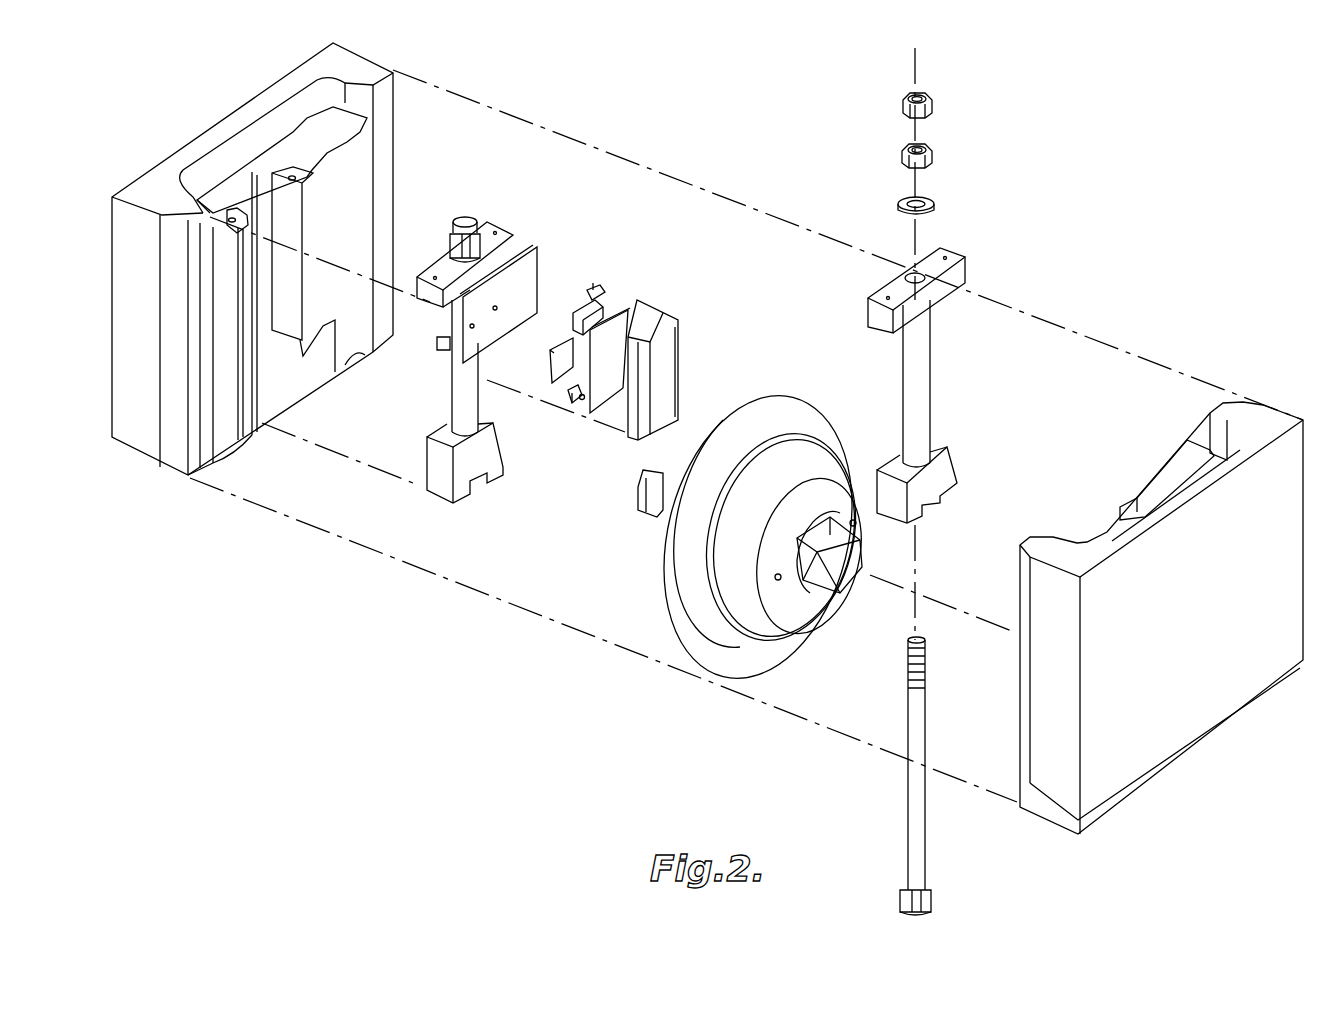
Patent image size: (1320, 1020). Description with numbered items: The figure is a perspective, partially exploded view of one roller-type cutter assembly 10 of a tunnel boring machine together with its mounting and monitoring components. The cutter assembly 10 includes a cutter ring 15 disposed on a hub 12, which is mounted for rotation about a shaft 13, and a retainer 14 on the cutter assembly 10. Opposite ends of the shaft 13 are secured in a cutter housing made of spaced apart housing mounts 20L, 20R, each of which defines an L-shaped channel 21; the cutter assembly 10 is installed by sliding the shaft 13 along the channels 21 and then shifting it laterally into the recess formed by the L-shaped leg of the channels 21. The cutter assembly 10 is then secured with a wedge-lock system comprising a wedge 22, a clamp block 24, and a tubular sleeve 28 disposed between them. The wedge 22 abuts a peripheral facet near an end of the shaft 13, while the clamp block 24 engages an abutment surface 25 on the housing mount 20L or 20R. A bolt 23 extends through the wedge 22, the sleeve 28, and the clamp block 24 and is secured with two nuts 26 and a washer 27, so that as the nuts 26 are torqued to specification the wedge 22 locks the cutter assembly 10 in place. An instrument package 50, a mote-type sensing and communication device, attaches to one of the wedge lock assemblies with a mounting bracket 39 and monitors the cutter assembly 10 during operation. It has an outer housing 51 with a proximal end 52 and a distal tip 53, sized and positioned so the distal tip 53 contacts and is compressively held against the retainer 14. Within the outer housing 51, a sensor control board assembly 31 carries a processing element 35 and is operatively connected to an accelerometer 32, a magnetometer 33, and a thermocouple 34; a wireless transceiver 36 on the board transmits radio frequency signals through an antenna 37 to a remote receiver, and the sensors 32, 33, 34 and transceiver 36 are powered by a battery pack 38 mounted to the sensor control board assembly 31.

The cutter assembly 10 is at (765, 505).
The hub 12 is at (826, 455).
The shaft 13 is at (845, 580).
The retainer 14 is at (808, 608).
The cutter ring 15 is at (806, 400).
The housing mount 20L is at (352, 47).
The housing mount 20R is at (1263, 405).
The L-shaped channel 21 is at (292, 375).
The wedge 22 is at (438, 490).
The bolt 23 is at (466, 214).
The clamp block 24 is at (512, 246).
The abutment surface 25 is at (332, 160).
The nut 26 is at (932, 103).
The washer 27 is at (935, 206).
The tubular sleeve 28 is at (452, 405).
The sensor control board assembly 31 is at (640, 308).
The accelerometer 32 is at (574, 406).
The magnetometer 33 is at (570, 398).
The thermocouple 34 is at (584, 402).
The processing element 35 is at (550, 388).
The wireless transceiver 36 is at (600, 300).
The antenna 37 is at (578, 277).
The battery pack 38 is at (612, 318).
The mounting bracket 39 is at (548, 250).
The instrument package 50 is at (670, 258).
The outer housing 51 is at (680, 340).
The proximal end 52 is at (668, 316).
The distal tip 53 is at (680, 420).